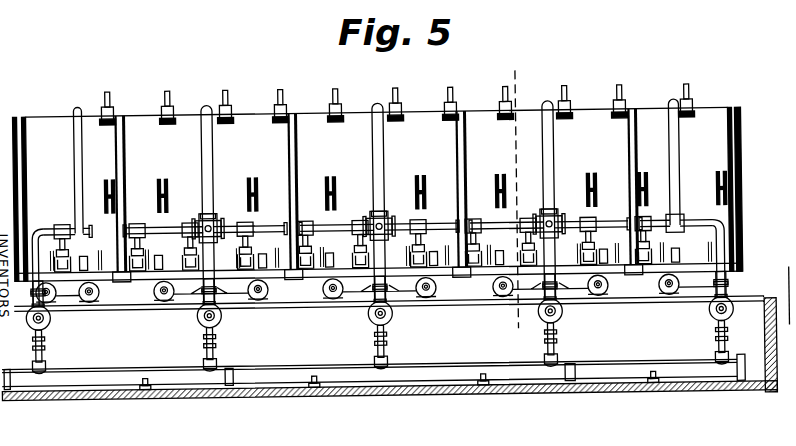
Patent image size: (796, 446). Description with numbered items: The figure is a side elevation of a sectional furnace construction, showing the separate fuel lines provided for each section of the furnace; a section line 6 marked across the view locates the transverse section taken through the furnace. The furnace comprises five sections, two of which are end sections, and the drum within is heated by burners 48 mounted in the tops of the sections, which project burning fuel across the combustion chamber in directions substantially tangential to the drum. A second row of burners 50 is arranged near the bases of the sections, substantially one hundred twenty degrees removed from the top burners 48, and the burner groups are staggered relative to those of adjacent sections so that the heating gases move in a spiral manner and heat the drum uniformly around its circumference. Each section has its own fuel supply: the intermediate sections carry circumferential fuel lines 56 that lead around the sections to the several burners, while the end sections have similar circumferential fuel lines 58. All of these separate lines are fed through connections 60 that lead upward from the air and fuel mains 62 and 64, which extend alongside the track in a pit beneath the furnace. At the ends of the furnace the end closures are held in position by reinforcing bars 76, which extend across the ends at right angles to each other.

The burners 48 is at (280, 104).
The circumferential fuel lines 56 is at (214, 146).
The circumferential fuel lines 58 is at (76, 152).
The burners 50 is at (251, 247).
The connections 60 is at (727, 302).
The reinforcing bars 76 is at (740, 190).
The air main 62 is at (582, 372).
The fuel main 64 is at (636, 365).
The section line 6- 6 is at (538, 65).